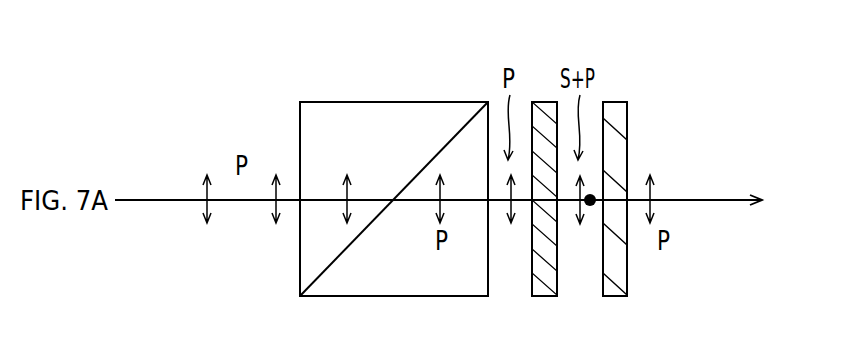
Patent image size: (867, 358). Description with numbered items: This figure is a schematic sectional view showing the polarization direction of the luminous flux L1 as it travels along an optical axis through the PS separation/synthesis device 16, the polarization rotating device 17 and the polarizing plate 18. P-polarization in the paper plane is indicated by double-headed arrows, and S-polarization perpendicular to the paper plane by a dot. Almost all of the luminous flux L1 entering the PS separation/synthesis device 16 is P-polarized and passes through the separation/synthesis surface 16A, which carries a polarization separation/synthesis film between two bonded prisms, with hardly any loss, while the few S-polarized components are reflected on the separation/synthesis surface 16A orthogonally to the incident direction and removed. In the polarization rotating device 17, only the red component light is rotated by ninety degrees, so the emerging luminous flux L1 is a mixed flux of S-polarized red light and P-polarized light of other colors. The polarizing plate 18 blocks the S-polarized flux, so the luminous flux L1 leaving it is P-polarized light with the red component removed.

The PS separation/synthesis device 16 is at (390, 102).
The separation/synthesis surface 16A is at (320, 276).
The polarization rotating device 17 is at (543, 102).
The polarizing plate 18 is at (614, 102).
The luminous flux L1 is at (139, 201).